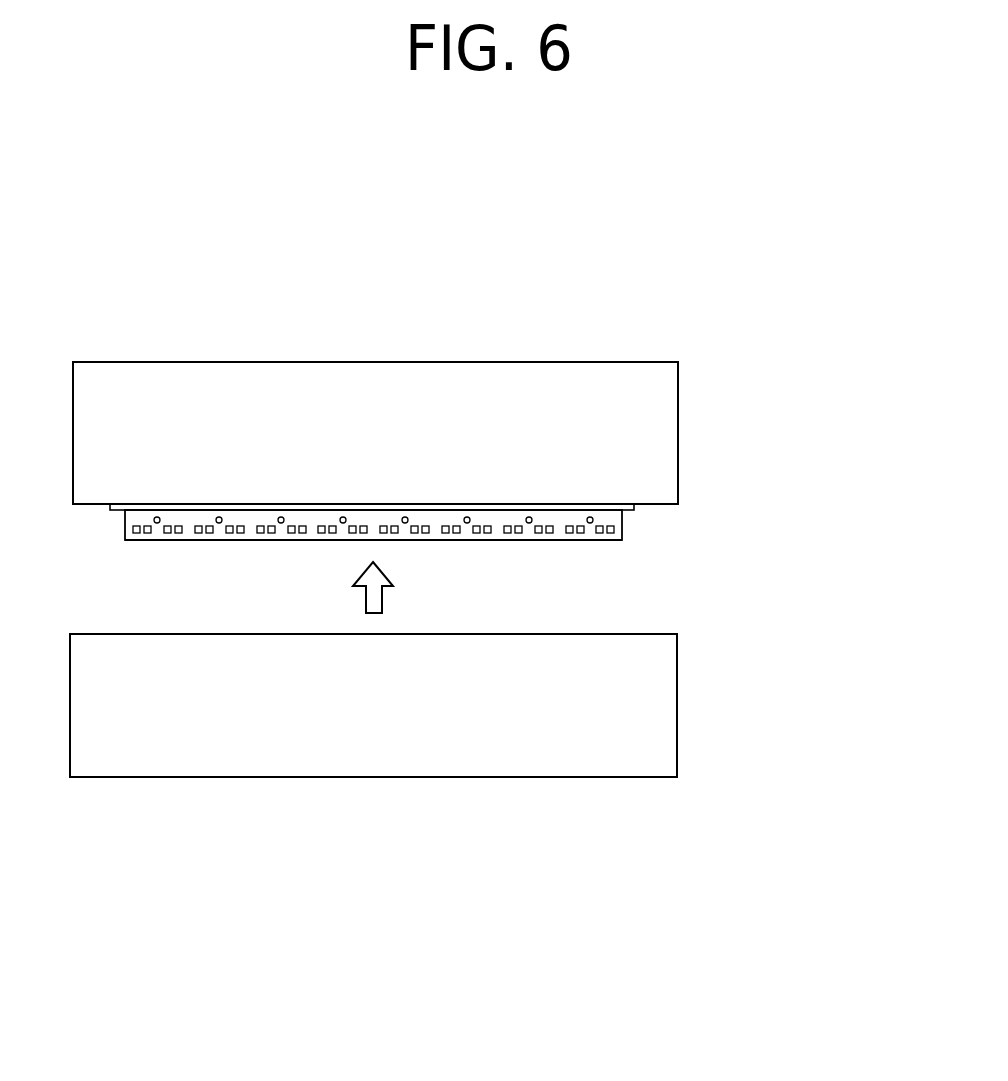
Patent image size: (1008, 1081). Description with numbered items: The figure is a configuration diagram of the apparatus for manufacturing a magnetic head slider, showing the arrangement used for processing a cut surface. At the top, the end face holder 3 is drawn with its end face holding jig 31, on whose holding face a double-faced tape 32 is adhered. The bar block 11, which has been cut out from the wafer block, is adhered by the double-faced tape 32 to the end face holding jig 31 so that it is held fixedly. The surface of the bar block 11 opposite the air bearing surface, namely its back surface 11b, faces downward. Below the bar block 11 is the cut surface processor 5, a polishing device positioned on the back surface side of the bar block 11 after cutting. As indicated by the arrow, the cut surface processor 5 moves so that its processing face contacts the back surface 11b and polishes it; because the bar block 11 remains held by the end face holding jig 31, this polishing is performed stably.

The end face holder 3 is at (580, 343).
The end face holding jig 31 is at (678, 431).
The double-faced tape 32 is at (634, 510).
The bar block 11 is at (622, 532).
The back surface 11b is at (582, 540).
The cut surface processor 5 is at (608, 777).